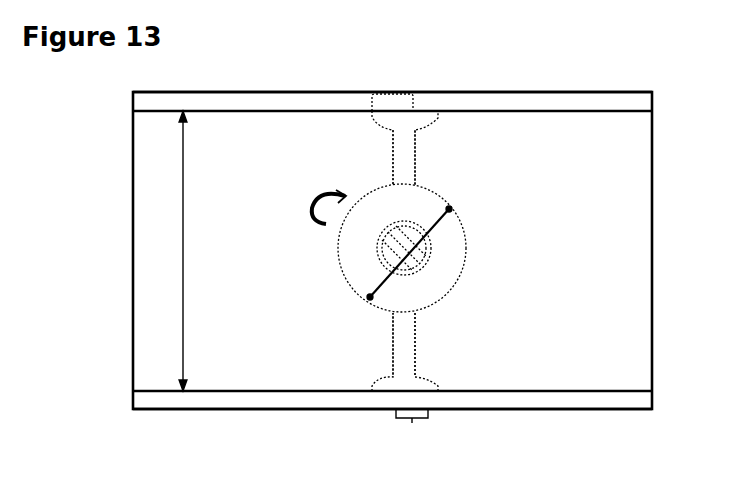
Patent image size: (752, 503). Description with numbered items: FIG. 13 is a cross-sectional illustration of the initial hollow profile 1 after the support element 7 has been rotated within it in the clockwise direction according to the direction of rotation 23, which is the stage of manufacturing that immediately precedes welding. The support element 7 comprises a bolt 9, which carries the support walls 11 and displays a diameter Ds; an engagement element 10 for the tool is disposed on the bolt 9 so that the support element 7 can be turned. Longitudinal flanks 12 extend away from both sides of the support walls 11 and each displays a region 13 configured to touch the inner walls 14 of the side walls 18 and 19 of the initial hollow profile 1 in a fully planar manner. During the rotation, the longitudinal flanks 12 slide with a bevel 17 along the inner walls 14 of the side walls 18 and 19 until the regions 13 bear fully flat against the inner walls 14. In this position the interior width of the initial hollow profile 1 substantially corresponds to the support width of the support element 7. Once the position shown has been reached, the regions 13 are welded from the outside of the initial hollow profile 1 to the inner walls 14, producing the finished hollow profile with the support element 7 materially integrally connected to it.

The initial hollow profile 1 is at (641, 58).
The support element 7 is at (309, 323).
The bolt 9 is at (440, 283).
The engagement element 10 is at (400, 233).
The support walls 11 is at (400, 156).
The longitudinal flanks 12 is at (420, 123).
The region 13 is at (396, 84).
The inner walls 14 is at (300, 112).
The bevel 17 is at (455, 92).
The side wall 18 is at (546, 406).
The side wall 19 is at (280, 92).
The direction of rotation 23 is at (322, 206).
The diameter Ds is at (430, 232).